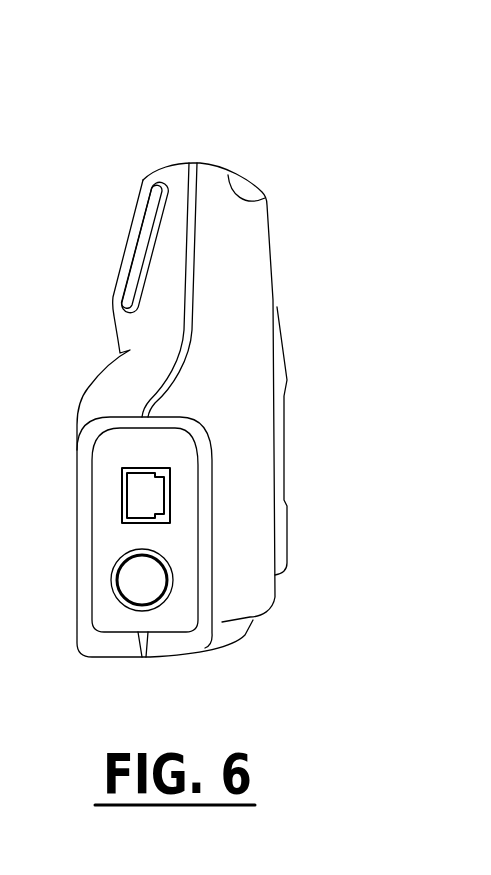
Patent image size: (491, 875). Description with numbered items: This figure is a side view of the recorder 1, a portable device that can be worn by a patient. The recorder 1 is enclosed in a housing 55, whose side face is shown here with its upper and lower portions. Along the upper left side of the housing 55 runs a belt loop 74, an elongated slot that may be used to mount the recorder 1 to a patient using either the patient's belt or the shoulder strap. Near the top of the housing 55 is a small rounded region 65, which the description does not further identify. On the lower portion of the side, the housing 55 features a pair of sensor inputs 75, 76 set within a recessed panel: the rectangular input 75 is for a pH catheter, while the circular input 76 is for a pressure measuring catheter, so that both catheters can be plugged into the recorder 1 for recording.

The recorder 1 is at (322, 132).
The housing 55 is at (243, 382).
The cap portion 65 is at (250, 183).
The belt loop 74 is at (148, 177).
The sensor input 75 is at (145, 507).
The sensor input 76 is at (152, 593).